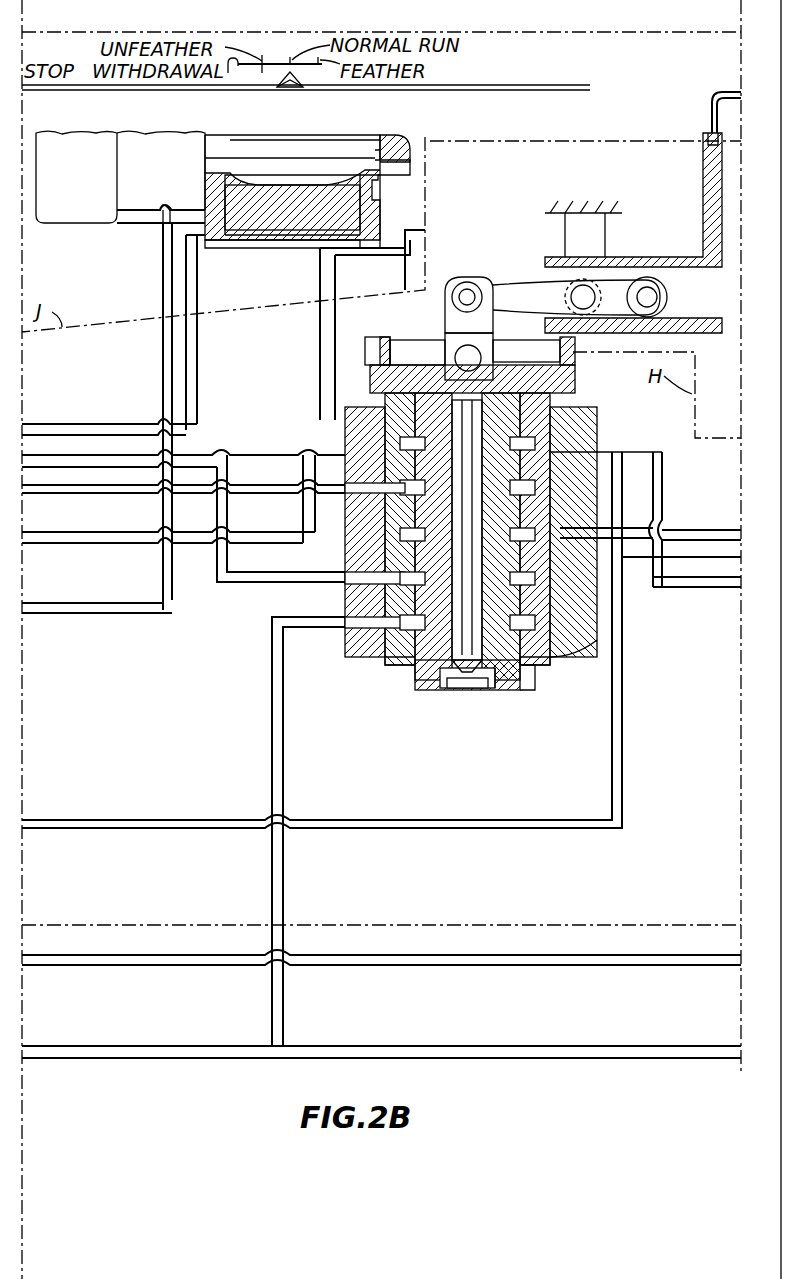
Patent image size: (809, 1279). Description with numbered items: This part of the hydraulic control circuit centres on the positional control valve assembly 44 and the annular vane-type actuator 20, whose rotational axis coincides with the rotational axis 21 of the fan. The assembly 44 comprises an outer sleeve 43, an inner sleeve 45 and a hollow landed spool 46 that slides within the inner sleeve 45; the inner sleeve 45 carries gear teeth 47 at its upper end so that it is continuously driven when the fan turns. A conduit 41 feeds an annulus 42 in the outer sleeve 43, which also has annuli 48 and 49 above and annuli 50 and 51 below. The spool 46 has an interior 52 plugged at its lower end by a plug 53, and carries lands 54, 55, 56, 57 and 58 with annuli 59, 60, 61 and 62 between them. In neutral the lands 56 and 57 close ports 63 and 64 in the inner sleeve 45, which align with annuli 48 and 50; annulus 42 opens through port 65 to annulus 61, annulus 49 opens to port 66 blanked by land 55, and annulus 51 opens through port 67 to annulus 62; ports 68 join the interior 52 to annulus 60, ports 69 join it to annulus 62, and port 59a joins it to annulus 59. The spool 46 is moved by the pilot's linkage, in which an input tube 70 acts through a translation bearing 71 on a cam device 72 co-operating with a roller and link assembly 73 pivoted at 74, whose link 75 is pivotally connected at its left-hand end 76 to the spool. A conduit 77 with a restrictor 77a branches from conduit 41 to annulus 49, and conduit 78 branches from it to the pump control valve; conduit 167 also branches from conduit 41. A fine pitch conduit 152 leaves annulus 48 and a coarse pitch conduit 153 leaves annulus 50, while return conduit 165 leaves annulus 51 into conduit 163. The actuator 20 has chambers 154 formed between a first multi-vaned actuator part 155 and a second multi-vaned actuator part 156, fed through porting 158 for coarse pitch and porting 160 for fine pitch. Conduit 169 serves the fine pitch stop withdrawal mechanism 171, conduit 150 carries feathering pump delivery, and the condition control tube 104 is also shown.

The actuator 20 is at (276, 262).
The rotational axis 21 is at (565, 35).
The conduit 41 is at (706, 531).
The annulus 42 is at (660, 557).
The outer sleeve 43 is at (545, 636).
The positional control valve assembly 44 is at (470, 692).
The inner sleeve 45 is at (422, 684).
The landed spool 46 is at (395, 660).
The gear teeth 47 is at (562, 356).
The annulus 48 is at (562, 456).
The annulus 49 is at (556, 426).
The annulus 50 is at (556, 592).
The annulus 51 is at (542, 612).
The interior 52 is at (460, 548).
The plug 53 is at (455, 684).
The land 54 is at (512, 348).
The land 55 is at (566, 386).
The land 56 is at (578, 442).
The land 57 is at (420, 602).
The land 58 is at (502, 682).
The annulus 59 is at (410, 452).
The port 59a is at (415, 405).
The annulus 60 is at (400, 470).
The annulus 61 is at (340, 517).
The annulus 62 is at (536, 660).
The port 63 is at (540, 488).
The port 64 is at (548, 562).
The port 65 is at (562, 510).
The port 66 is at (556, 402).
The port 67 is at (522, 665).
The ports 68 is at (420, 486).
The ports 69 is at (412, 655).
The input tube 70 is at (724, 92).
The translation bearing 71 is at (706, 136).
The cam device 72 is at (700, 262).
The roller and link assembly 73 is at (642, 290).
The pivot 74 is at (583, 297).
The link 75 is at (512, 292).
The left-hand end 76 is at (467, 297).
The conduit 77 is at (622, 478).
The restrictor 77a is at (626, 506).
The conduit 78 is at (688, 587).
The tube 104 is at (450, 86).
The conduit 150 is at (345, 962).
The fine pitch conduit 152 is at (60, 487).
The coarse pitch conduit 153 is at (225, 582).
The chambers 154 is at (292, 207).
The first multi-vaned actuator part 155 is at (263, 165).
The second multi-vaned actuator part 156 is at (218, 280).
The porting 158 is at (200, 218).
The porting 160 is at (400, 212).
The conduit 163 is at (506, 1053).
The return conduit 165 is at (276, 625).
The conduit 167 is at (616, 722).
The conduit 169 is at (170, 298).
The fine pitch stop withdrawal mechanism 171 is at (76, 206).